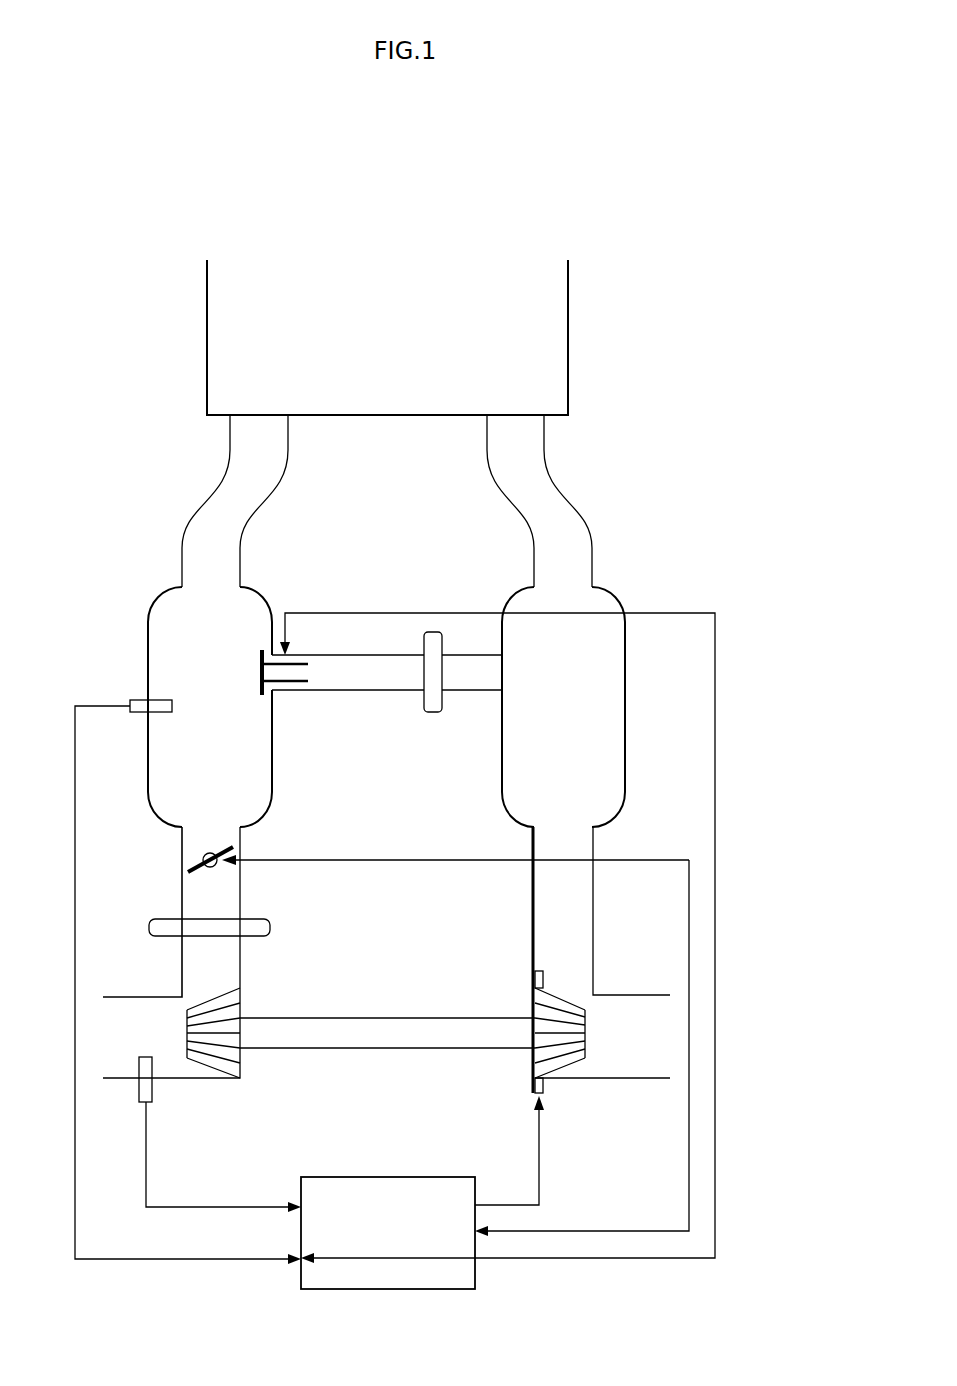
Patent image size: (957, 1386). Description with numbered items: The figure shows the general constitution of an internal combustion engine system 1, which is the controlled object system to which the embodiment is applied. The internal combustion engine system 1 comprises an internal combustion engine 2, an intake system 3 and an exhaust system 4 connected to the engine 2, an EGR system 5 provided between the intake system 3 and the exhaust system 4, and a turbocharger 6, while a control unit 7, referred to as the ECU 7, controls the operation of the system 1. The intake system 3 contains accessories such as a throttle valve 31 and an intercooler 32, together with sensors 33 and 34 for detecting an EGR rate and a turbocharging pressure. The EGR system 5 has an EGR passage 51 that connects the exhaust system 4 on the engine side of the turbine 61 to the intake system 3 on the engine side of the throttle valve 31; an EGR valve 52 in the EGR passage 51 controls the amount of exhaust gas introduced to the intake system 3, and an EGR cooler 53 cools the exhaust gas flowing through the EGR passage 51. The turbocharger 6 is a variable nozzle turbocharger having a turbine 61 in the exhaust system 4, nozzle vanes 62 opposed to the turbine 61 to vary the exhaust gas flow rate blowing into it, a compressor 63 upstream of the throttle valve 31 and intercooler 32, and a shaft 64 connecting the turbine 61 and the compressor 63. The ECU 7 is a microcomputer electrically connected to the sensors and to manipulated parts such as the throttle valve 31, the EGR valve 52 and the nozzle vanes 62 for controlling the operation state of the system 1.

The internal combustion engine system 1 is at (761, 216).
The internal combustion engine 2 is at (386, 425).
The intake system 3 is at (278, 768).
The exhaust system 4 is at (496, 768).
The EGR system 5 is at (320, 628).
The EGR passage 51 is at (362, 650).
The EGR valve 52 is at (260, 672).
The EGR cooler 53 is at (433, 630).
The turbocharger 6 is at (428, 984).
The turbine 61 is at (563, 1068).
The nozzle vanes 62 is at (530, 1080).
The compressor 63 is at (215, 1065).
The shaft 64 is at (304, 1044).
The control unit (ECU) 7 is at (387, 1168).
The throttle valve 31 is at (200, 856).
The intercooler 32 is at (270, 927).
The sensor 33 is at (146, 1055).
The sensor 34 is at (172, 706).